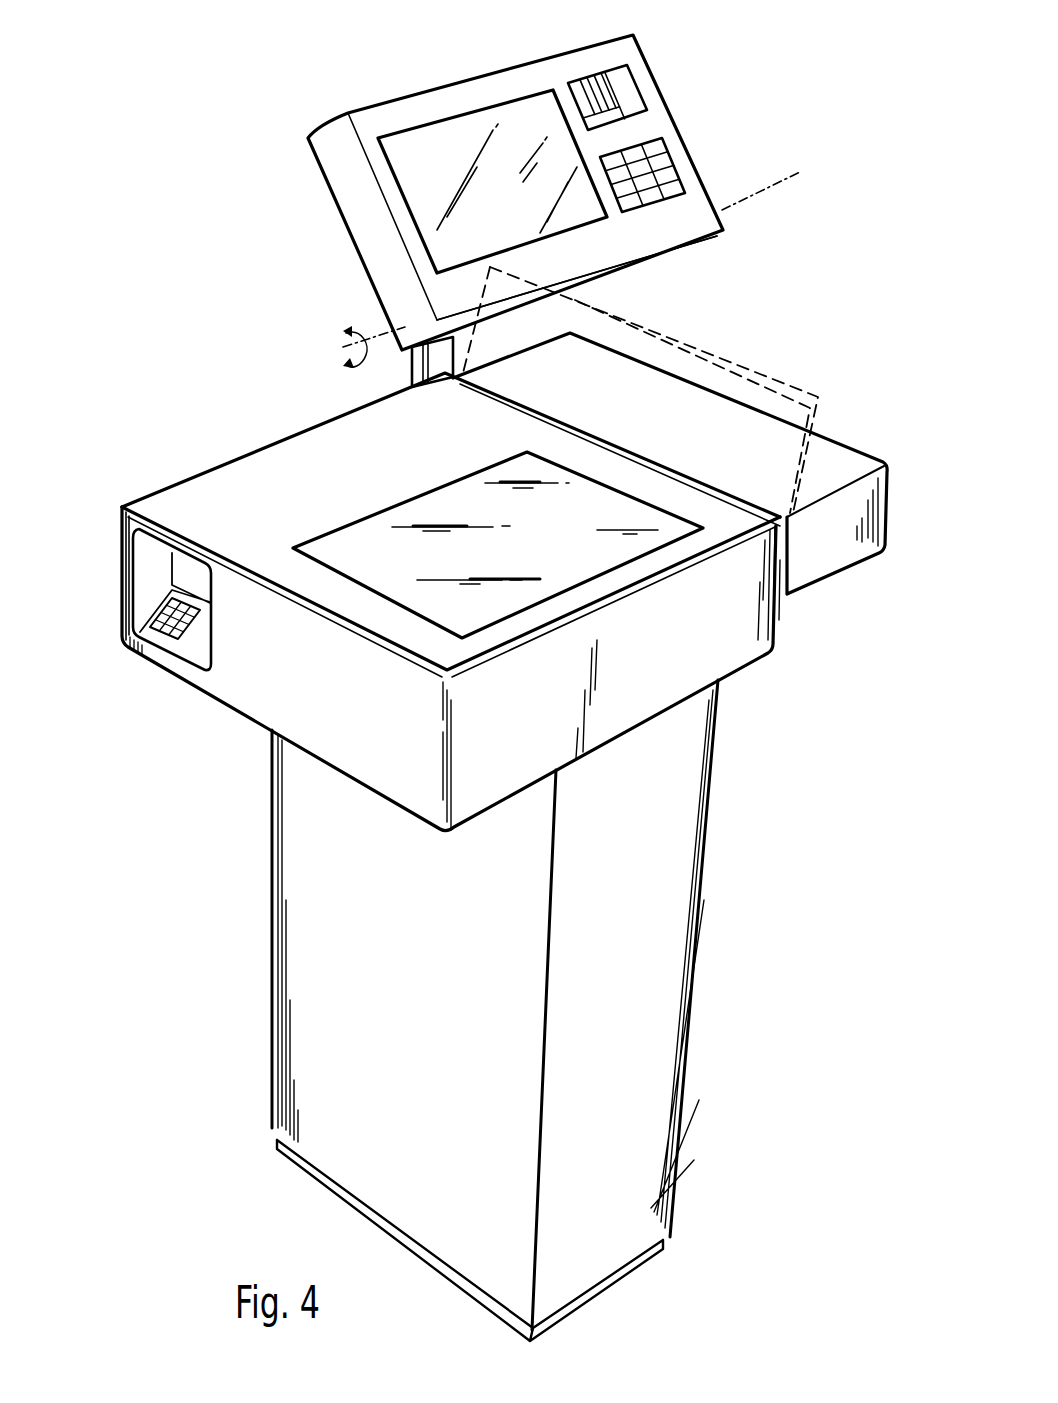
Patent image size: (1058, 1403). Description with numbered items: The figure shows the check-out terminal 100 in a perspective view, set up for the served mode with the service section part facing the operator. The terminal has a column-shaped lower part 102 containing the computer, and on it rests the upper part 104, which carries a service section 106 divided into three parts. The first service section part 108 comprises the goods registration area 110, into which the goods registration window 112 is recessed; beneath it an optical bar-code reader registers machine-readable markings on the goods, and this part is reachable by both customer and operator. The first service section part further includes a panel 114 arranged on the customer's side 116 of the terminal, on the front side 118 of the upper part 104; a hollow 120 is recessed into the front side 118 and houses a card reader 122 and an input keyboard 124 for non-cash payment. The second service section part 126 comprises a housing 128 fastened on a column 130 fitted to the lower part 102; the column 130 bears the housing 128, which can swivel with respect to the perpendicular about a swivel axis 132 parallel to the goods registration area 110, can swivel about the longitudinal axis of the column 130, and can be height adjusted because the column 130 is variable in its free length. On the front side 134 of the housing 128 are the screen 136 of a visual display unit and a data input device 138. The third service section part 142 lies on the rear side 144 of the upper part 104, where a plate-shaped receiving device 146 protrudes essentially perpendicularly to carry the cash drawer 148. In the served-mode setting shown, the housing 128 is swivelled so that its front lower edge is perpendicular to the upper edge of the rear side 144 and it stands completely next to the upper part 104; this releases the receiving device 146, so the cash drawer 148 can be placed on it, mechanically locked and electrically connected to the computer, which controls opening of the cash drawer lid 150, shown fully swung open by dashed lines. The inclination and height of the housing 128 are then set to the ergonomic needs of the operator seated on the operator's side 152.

The check-out terminal 100 is at (252, 160).
The lower part 102 is at (432, 987).
The upper part 104 is at (681, 650).
The service section 106 is at (265, 438).
The first service section part 108 is at (227, 500).
The goods registration area 110 is at (338, 497).
The goods registration window 112 is at (452, 500).
The panel 114 is at (147, 682).
The customer's side 116 is at (256, 1052).
The front side 118 is at (370, 721).
The hollow 120 is at (133, 550).
The card reader 122 is at (185, 578).
The input keyboard 124 is at (185, 635).
The second service section part 126 is at (712, 168).
The housing 128 is at (678, 128).
The column 130 is at (408, 385).
The swivel axis 132 is at (383, 338).
The front side of the housing 134 is at (627, 52).
The screen 136 is at (407, 160).
The data input device 138 is at (657, 190).
The third service section part 142 is at (863, 386).
The rear side 144 is at (778, 628).
The receiving device 146 is at (863, 557).
The cash drawer 148 is at (845, 555).
The cash drawer lid 150 is at (709, 357).
The operator's side 152 is at (700, 1072).